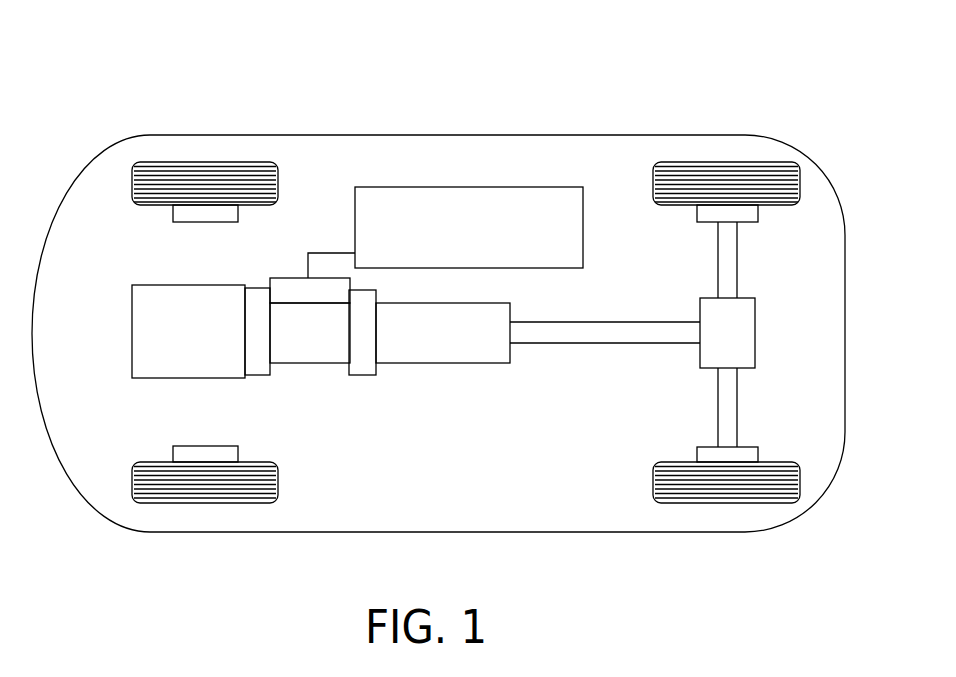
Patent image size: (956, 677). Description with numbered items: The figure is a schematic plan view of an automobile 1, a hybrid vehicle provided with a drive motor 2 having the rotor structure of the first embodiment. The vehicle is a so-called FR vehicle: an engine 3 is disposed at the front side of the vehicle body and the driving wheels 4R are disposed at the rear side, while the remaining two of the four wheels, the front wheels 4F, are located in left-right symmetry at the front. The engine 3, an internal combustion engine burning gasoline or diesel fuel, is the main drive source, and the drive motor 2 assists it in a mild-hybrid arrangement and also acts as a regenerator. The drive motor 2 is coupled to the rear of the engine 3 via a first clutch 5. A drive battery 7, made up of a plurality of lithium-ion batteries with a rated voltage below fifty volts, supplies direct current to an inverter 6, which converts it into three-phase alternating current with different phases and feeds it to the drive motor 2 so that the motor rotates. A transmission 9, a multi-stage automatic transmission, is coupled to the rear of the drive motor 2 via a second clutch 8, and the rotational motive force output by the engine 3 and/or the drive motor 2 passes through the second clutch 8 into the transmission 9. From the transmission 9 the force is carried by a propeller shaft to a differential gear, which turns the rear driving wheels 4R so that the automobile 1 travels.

The automobile 1 is at (413, 3).
The drive motor 2 is at (308, 347).
The engine 3 is at (168, 327).
The front wheels 4F is at (210, 162).
The rear driving wheels 4R is at (708, 162).
The first clutch 5 is at (258, 367).
The inverter 6 is at (295, 293).
The drive battery 7 is at (462, 215).
The second clutch 8 is at (360, 362).
The transmission 9 is at (458, 347).